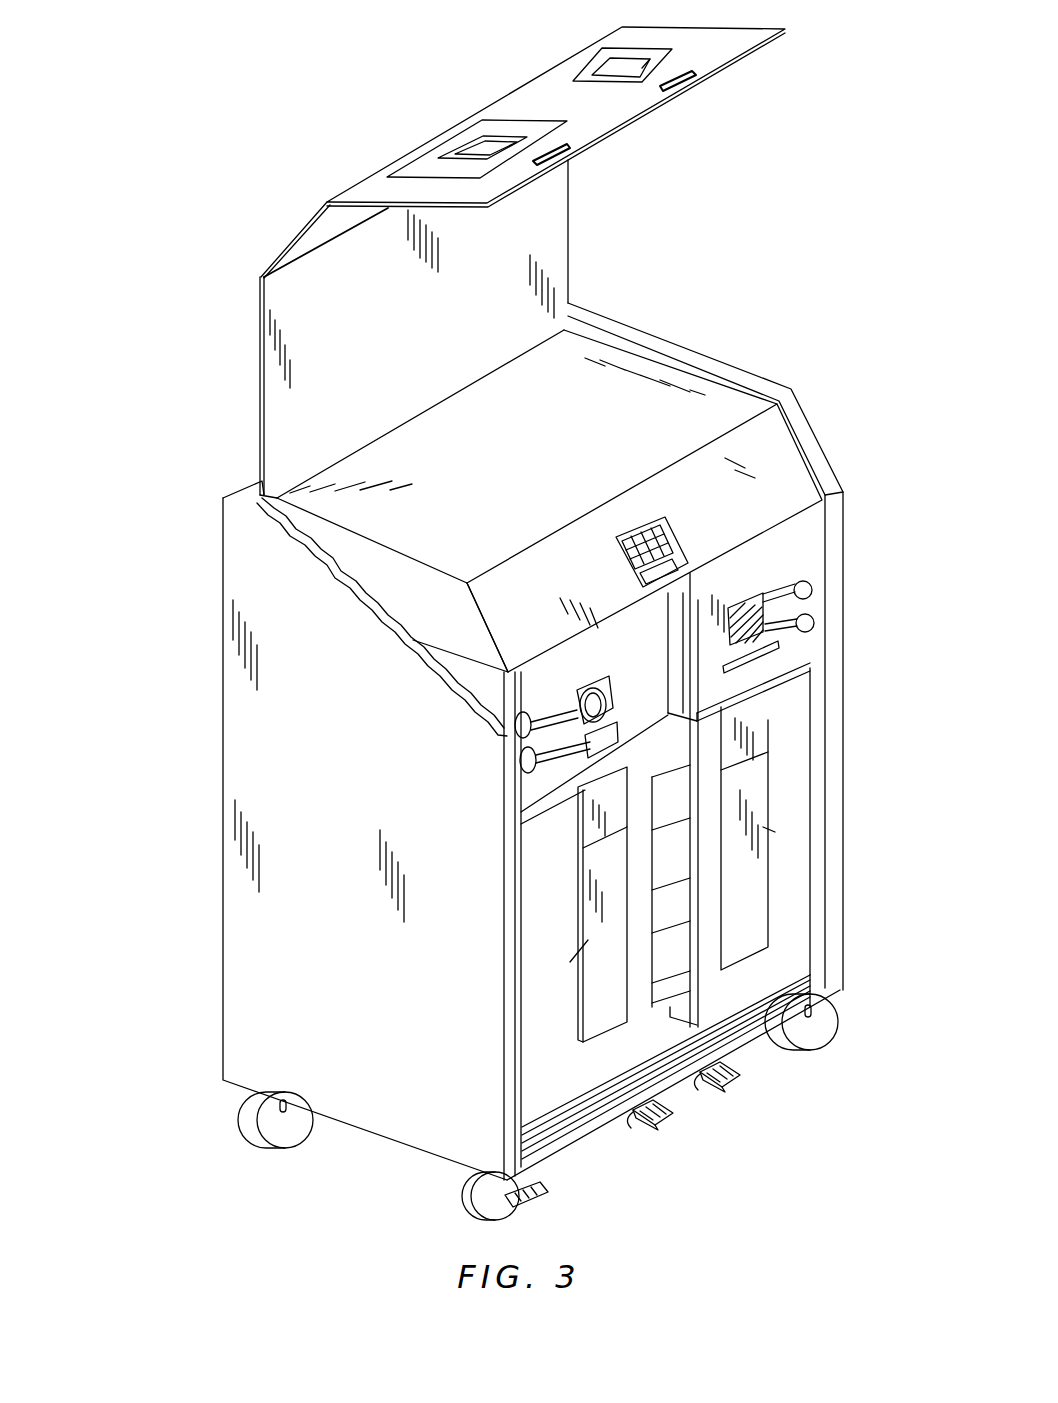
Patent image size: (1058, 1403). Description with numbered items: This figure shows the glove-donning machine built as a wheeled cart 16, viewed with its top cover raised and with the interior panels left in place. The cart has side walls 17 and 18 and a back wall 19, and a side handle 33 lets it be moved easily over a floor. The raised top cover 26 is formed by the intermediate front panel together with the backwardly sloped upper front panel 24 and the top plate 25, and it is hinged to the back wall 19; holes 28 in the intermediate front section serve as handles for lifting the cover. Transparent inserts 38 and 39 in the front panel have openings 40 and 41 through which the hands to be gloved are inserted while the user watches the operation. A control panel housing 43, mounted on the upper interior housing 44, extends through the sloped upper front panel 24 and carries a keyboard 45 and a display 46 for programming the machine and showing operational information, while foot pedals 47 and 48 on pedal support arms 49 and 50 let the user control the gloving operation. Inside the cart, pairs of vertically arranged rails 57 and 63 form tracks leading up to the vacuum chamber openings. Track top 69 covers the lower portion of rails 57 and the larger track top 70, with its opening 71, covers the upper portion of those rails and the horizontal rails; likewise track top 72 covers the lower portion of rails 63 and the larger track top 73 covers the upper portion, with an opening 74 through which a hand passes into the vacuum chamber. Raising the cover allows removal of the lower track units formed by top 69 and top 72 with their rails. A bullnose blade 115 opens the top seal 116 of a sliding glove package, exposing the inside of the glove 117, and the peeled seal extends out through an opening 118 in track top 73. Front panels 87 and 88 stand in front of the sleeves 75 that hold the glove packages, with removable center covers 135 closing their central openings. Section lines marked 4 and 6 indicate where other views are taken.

The wheeled cart 16 is at (754, 328).
The side wall 17 is at (655, 333).
The side wall 18 is at (343, 1112).
The back wall 19 is at (247, 490).
The upper front panel 24 is at (312, 228).
The top plate 25 is at (277, 310).
The top cover 26 is at (588, 229).
The holes 28 is at (688, 90).
The side handle 33 is at (758, 46).
The transparent insert 38 is at (670, 52).
The transparent insert 39 is at (498, 155).
The opening 40 is at (613, 75).
The opening 41 is at (473, 152).
The control panel housing 43 is at (672, 535).
The upper interior housing 44 is at (783, 450).
The keyboard 45 is at (648, 533).
The display 46 is at (675, 565).
The foot pedal 47 is at (742, 1083).
The foot pedal 48 is at (655, 1130).
The pedal support arm 49 is at (698, 1090).
The pedal support arm 50 is at (622, 1126).
The vertically arranged rails 57 is at (723, 710).
The vertically arranged rails 63 is at (575, 797).
The track top 69 is at (768, 716).
The track top 70 is at (810, 545).
The opening 71 is at (762, 598).
The track top 72 is at (588, 835).
The track top 73 is at (517, 675).
The opening 74 is at (613, 677).
The sleeves 75 is at (662, 923).
The front panel 87 is at (795, 885).
The front panel 88 is at (540, 1017).
The bullnose blade 115 is at (735, 657).
The top seal 116 is at (612, 745).
The glove 117 is at (588, 697).
The opening 118 is at (773, 640).
The center covers 135 is at (670, 905).
The section line 4 is at (612, 868).
The section line 6 is at (622, 688).